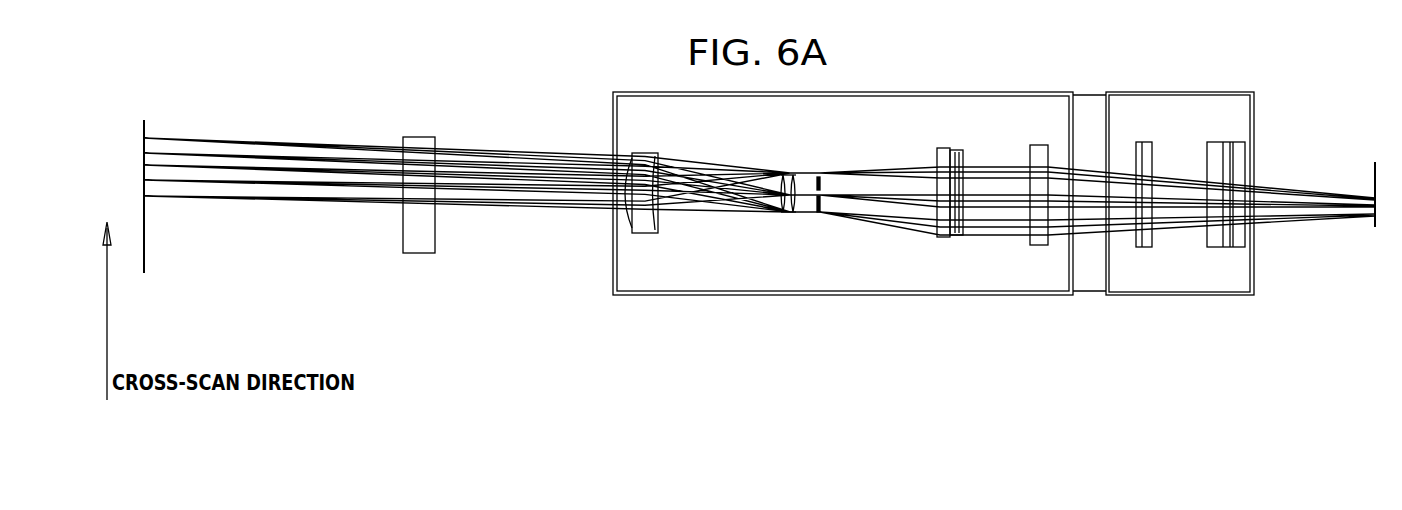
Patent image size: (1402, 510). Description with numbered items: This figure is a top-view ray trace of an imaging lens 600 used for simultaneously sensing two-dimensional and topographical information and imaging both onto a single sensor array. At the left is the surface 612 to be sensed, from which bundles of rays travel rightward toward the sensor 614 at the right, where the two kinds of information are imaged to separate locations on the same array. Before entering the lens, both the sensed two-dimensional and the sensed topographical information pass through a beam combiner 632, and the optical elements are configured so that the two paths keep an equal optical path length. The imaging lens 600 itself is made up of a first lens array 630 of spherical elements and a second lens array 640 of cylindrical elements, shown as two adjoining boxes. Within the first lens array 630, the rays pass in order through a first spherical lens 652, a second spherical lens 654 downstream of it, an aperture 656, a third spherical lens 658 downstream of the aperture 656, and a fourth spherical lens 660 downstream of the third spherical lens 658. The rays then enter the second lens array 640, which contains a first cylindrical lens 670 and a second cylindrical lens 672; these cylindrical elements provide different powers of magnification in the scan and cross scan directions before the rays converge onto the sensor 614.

The imaging lens 600 is at (924, 190).
The surface 612 is at (144, 134).
The sensor 614 is at (1375, 163).
The first lens array 630 is at (613, 278).
The beam combiner 632 is at (403, 227).
The second lens array 640 is at (1218, 295).
The first spherical lens 652 is at (653, 153).
The second spherical lens 654 is at (793, 175).
The aperture 656 is at (819, 213).
The third spherical lens 658 is at (943, 238).
The fourth spherical lens 660 is at (1038, 246).
The first cylindrical lens 670 is at (1143, 248).
The second cylindrical lens 672 is at (1243, 142).